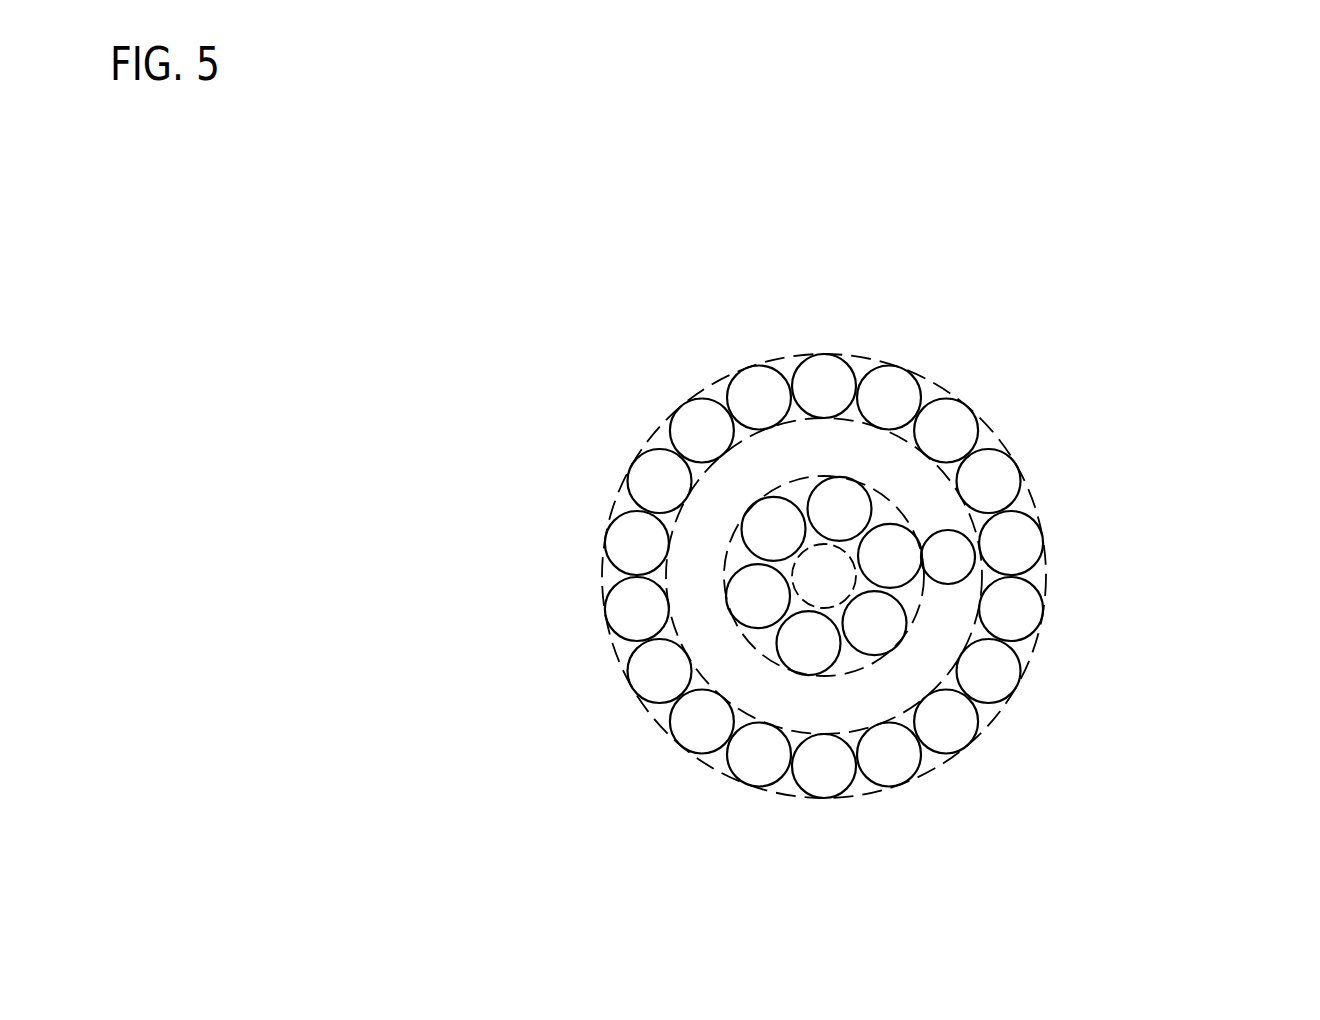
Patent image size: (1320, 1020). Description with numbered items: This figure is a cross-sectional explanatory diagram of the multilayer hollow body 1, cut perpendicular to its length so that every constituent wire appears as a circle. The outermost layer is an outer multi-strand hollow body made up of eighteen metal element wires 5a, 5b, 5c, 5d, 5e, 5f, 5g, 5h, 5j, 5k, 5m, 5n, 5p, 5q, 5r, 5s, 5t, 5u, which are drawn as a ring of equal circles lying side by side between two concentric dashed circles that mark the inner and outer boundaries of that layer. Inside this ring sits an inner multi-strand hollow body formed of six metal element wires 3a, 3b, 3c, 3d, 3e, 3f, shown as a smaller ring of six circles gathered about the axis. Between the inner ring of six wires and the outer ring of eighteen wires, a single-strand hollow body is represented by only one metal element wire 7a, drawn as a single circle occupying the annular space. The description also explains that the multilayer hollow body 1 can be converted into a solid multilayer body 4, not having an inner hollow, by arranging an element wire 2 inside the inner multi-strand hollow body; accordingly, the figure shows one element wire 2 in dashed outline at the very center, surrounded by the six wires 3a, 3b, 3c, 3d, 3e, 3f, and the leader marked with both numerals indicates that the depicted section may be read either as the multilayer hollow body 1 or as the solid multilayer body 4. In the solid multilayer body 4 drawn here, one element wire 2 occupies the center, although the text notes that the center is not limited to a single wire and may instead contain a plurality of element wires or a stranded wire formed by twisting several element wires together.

The multilayer hollow body 1 is at (1133, 362).
The solid multilayer body 4 is at (824, 576).
The element wire 2 is at (823, 577).
The metal element wire 3a is at (838, 505).
The metal element wire 3b is at (895, 547).
The metal element wire 3c is at (878, 630).
The metal element wire 3d is at (805, 655).
The metal element wire 3e is at (758, 613).
The metal element wire 3f is at (772, 527).
The metal element wire 7a is at (950, 557).
The metal element wire 5a is at (898, 390).
The metal element wire 5b is at (948, 432).
The metal element wire 5c is at (990, 478).
The metal element wire 5d is at (1015, 543).
The metal element wire 5e is at (1015, 615).
The metal element wire 5f is at (990, 675).
The metal element wire 5g is at (948, 728).
The metal element wire 5h is at (892, 760).
The metal element wire 5j is at (824, 770).
The metal element wire 5k is at (757, 758).
The metal element wire 5m is at (701, 726).
The metal element wire 5n is at (657, 676).
The metal element wire 5p is at (633, 610).
The metal element wire 5q is at (633, 543).
The metal element wire 5r is at (659, 478).
The metal element wire 5s is at (701, 432).
The metal element wire 5t is at (758, 392).
The metal element wire 5u is at (830, 388).